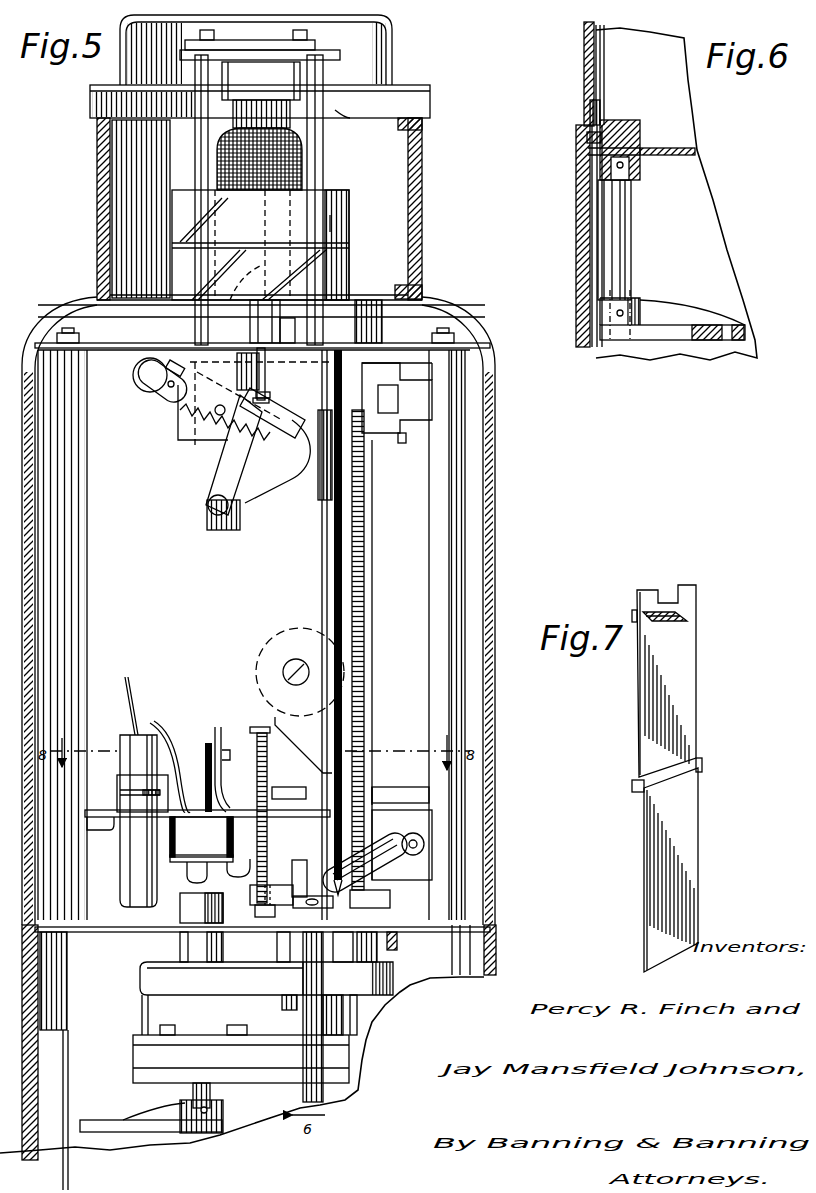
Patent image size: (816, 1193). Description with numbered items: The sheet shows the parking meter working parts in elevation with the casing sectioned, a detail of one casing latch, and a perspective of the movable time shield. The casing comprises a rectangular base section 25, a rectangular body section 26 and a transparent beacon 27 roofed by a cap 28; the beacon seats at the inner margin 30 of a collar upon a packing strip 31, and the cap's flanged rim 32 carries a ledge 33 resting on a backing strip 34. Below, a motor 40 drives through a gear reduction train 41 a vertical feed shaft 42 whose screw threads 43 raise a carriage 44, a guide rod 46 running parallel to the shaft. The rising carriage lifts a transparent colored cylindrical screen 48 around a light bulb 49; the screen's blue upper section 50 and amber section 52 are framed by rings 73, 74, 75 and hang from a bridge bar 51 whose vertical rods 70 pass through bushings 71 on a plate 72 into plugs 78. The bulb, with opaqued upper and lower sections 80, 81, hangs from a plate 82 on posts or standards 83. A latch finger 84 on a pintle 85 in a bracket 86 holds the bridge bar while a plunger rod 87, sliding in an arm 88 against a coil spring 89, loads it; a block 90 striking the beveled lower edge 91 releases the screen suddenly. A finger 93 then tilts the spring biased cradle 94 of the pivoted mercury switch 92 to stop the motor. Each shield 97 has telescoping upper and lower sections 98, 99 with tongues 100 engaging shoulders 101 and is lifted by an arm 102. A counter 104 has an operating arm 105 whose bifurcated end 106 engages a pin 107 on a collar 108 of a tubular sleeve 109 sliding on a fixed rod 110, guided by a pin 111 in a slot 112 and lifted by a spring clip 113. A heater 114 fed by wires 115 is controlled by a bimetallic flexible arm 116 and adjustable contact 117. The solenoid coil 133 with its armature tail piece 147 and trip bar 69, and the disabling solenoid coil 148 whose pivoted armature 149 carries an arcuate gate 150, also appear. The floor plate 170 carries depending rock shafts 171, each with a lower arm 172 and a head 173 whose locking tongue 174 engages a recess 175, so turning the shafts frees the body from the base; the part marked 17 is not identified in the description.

In FIG. 5, the supporting bar 17 is at (152, 1127).
In FIG. 6, the rectangular base section 25 is at (578, 208).
In FIG. 5, the rectangular body section 26 is at (490, 536).
In FIG. 6, the rectangular body section 26 is at (585, 68).
In FIG. 5, the transparent beacon 27 is at (414, 210).
In FIG. 5, the cap 28 is at (392, 64).
In FIG. 5, the inner margin 30 is at (117, 306).
In FIG. 5, the packing strip 31 is at (415, 270).
In FIG. 5, the flanged rim 32 is at (432, 106).
In FIG. 5, the inwardly extending flange or ledge 33 is at (332, 106).
In FIG. 5, the backing strip 34 is at (400, 128).
In FIG. 5, the motor 40 is at (165, 1013).
In FIG. 5, the gear reduction train 41 is at (393, 975).
In FIG. 5, the feed shaft 42 is at (360, 968).
In FIG. 5, the screw threads 43 is at (364, 469).
In FIG. 5, the carriage 44 is at (303, 858).
In FIG. 5, the guide rod 46 is at (355, 582).
In FIG. 5, the transparent colored cylindrical screen 48 is at (348, 222).
In FIG. 5, the light bulb 49 is at (262, 178).
In FIG. 5, the upper section of blue glass 50 is at (340, 234).
In FIG. 5, the bridge bar 51 is at (270, 405).
In FIG. 5, the amber section 52 is at (337, 259).
In FIG. 5, the trip bar 69 is at (369, 634).
In FIG. 5, the vertical rods 70 is at (260, 377).
In FIG. 5, the bushing 71 is at (262, 332).
In FIG. 5, the plate 72 is at (95, 352).
In FIG. 5, the ring 73 is at (335, 197).
In FIG. 5, the ring 74 is at (350, 245).
In FIG. 5, the ring 75 is at (345, 308).
In FIG. 5, the plug 78 is at (254, 195).
In FIG. 5, the opaqued upper section 80 is at (217, 160).
In FIG. 5, the opaqued lower section 81 is at (250, 320).
In FIG. 5, the plate 82 is at (325, 59).
In FIG. 5, the posts or standards 83 is at (196, 103).
In FIG. 5, the latch finger 84 is at (228, 465).
In FIG. 5, the pintle 85 is at (208, 505).
In FIG. 5, the bracket 86 is at (215, 532).
In FIG. 5, the plunger rod 87 is at (254, 727).
In FIG. 5, the arm 88 is at (252, 898).
In FIG. 5, the coil spring 89 is at (268, 766).
In FIG. 5, the block or projection 90 is at (296, 865).
In FIG. 5, the beveled lower edge 91 is at (270, 487).
In FIG. 5, the pivoted mercury switch 92 is at (145, 387).
In FIG. 5, the finger 93 is at (270, 786).
In FIG. 5, the spring biased pivoted cradle 94 is at (281, 424).
In FIG. 7, the shields 97 is at (701, 745).
In FIG. 5, the upper section 98 is at (52, 1000).
In FIG. 7, the upper section 98 is at (684, 705).
In FIG. 5, the lower section 99 is at (68, 1080).
In FIG. 7, the lower section 99 is at (684, 846).
In FIG. 7, the tongues 100 is at (699, 770).
In FIG. 7, the shoulders 101 is at (702, 759).
In FIG. 7, the arm 102 is at (679, 611).
In FIG. 5, the counter 104 is at (419, 827).
In FIG. 5, the operating arm 105 is at (390, 868).
In FIG. 5, the bifurcated outer end 106 is at (343, 872).
In FIG. 5, the pin 107 is at (318, 880).
In FIG. 5, the collar 108 is at (358, 885).
In FIG. 5, the tubular sleeve 109 is at (325, 595).
In FIG. 5, the fixed rod 110 is at (333, 379).
In FIG. 5, the pin 111 is at (333, 428).
In FIG. 5, the slot 112 is at (334, 471).
In FIG. 5, the spring clip 113 is at (344, 840).
In FIG. 5, the heater 114 is at (130, 866).
In FIG. 5, the wires 115 is at (140, 704).
In FIG. 5, the bimetallic flexible arm 116 is at (204, 763).
In FIG. 5, the adjustable contact 117 is at (222, 757).
In FIG. 5, the solenoid coil 133 is at (256, 672).
In FIG. 5, the tail piece 147 is at (405, 790).
In FIG. 5, the solenoid coil 148 is at (307, 460).
In FIG. 5, the pivoted armature 149 is at (398, 428).
In FIG. 5, the arcuate gate 150 is at (415, 388).
In FIG. 5, the floor plate 170 is at (105, 932).
In FIG. 6, the floor plate 170 is at (683, 160).
In FIG. 5, the rock shafts 171 is at (303, 1013).
In FIG. 6, the rock shafts 171 is at (626, 247).
In FIG. 6, the arm 172 is at (679, 340).
In FIG. 5, the head 173 is at (203, 897).
In FIG. 6, the head 173 is at (631, 125).
In FIG. 5, the locking tongue 174 is at (307, 912).
In FIG. 6, the locking tongue 174 is at (601, 120).
In FIG. 6, the recess 175 is at (587, 132).